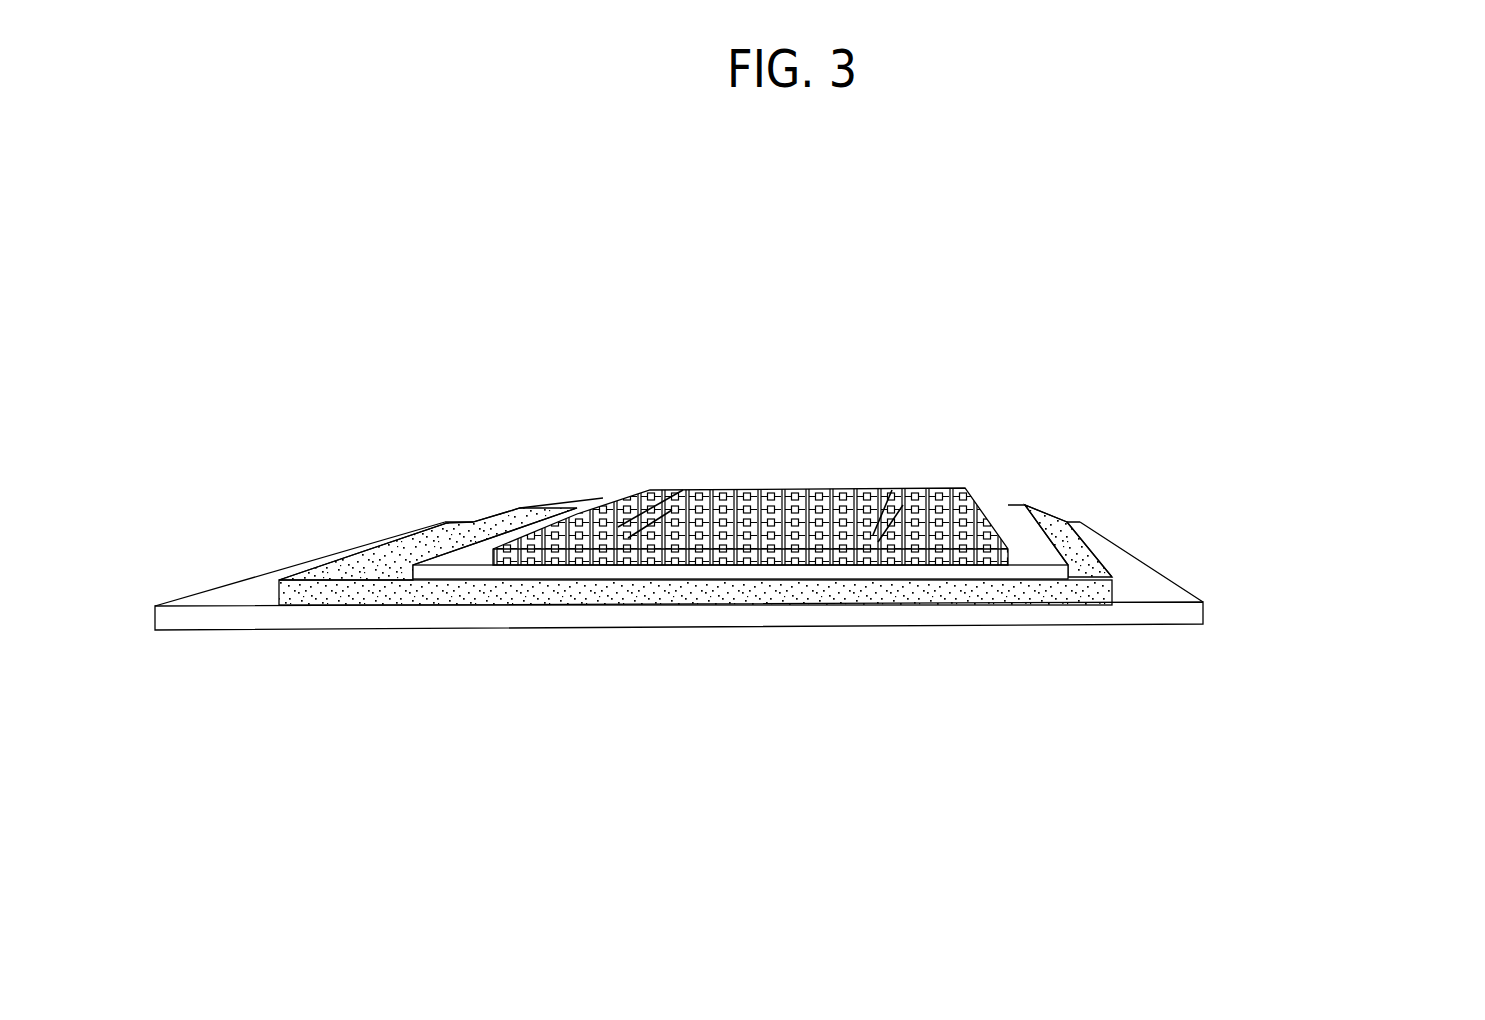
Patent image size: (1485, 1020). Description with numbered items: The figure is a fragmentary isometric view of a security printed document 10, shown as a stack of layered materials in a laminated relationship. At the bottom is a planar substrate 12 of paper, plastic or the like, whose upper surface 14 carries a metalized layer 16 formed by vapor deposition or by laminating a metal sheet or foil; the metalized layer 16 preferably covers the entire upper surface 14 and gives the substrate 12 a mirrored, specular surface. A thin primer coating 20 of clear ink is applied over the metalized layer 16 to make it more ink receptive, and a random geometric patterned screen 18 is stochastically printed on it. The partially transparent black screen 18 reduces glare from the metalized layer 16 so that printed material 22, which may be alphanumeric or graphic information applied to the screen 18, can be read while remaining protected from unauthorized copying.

The security printed document 10 is at (515, 437).
The planar substrate 12 is at (257, 622).
The upper surface 14 is at (243, 593).
The metalized layer 16 is at (493, 590).
The random geometric patterned screen 18 is at (790, 535).
The primer coating 20 is at (593, 570).
The printed material 22 is at (672, 492).